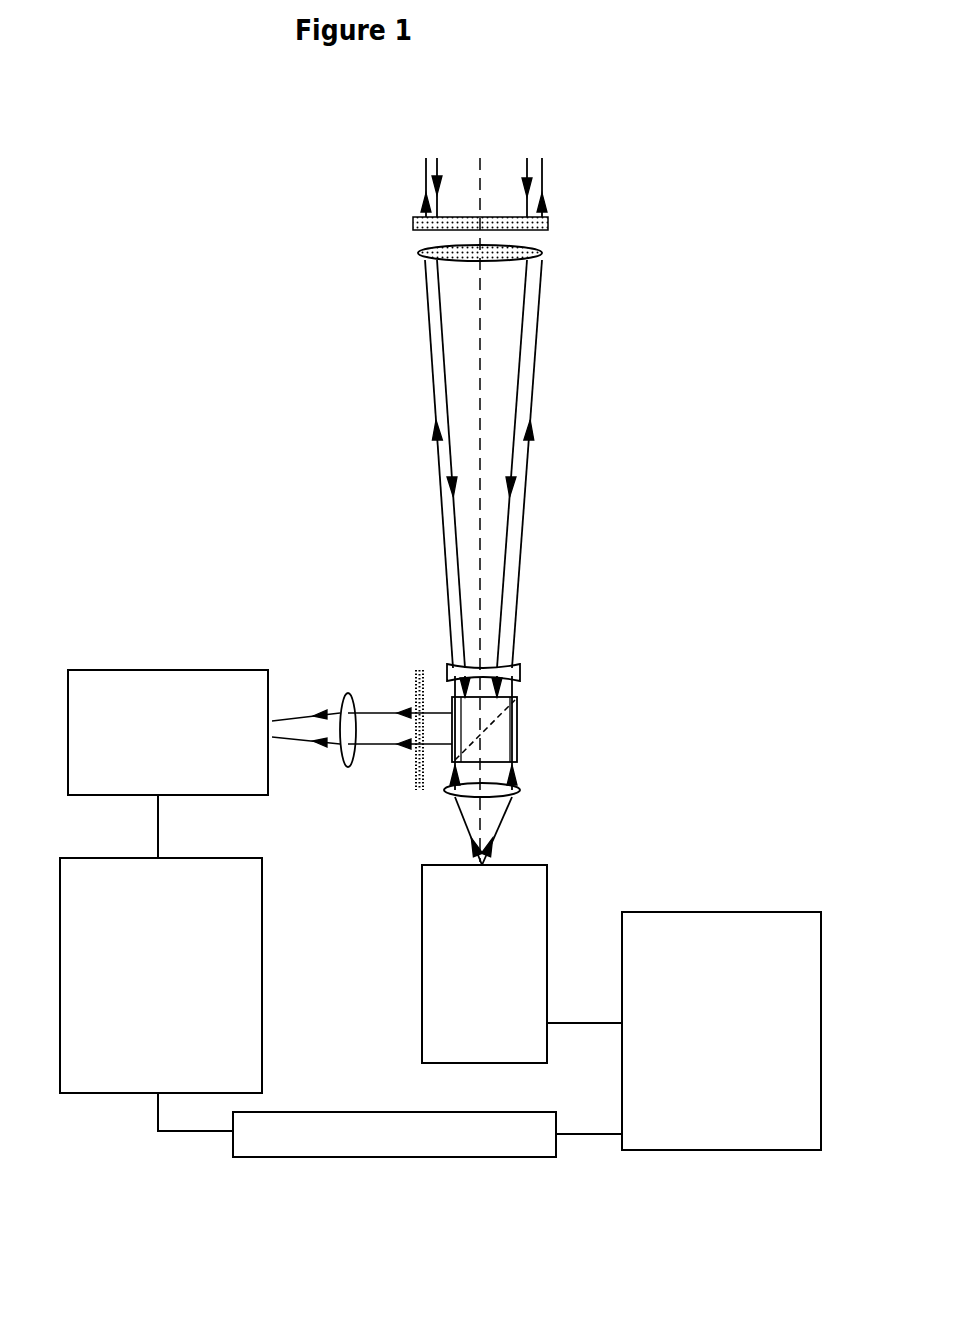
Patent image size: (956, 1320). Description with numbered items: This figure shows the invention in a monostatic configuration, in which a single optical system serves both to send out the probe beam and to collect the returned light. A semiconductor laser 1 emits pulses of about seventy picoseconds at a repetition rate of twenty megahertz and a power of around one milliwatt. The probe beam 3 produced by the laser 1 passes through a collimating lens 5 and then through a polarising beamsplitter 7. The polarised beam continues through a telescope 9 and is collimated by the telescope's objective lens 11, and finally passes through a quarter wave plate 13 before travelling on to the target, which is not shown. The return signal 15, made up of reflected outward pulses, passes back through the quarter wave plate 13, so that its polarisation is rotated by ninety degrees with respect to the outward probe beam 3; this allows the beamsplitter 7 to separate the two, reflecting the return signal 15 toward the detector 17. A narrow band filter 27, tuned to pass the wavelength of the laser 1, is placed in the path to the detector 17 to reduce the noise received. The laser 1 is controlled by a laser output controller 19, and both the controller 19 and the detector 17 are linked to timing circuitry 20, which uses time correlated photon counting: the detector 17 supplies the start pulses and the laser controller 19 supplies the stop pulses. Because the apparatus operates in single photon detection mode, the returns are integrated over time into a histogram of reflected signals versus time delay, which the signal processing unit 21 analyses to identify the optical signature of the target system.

The semiconductor laser 1 is at (484, 964).
The probe beam 3 is at (538, 198).
The collimating lens 5 is at (528, 788).
The polarising beamsplitter 7 is at (528, 728).
The telescope 9 is at (557, 240).
The objective lens 11 is at (417, 262).
The quarter wave plate 13 is at (403, 230).
The return signal 15 is at (517, 162).
The detector 17 is at (168, 732).
The laser output controller 19 is at (721, 1031).
The timing circuitry 20 is at (394, 1134).
The signal processing unit 21 is at (161, 975).
The narrow band filter 27 is at (405, 667).